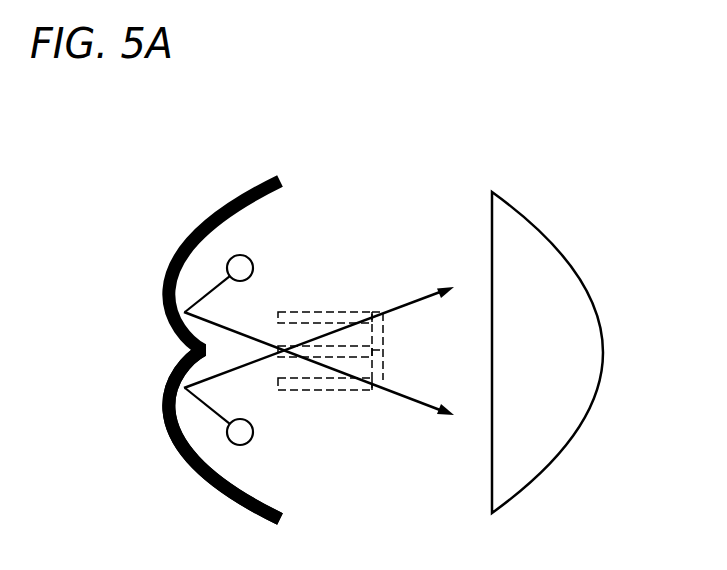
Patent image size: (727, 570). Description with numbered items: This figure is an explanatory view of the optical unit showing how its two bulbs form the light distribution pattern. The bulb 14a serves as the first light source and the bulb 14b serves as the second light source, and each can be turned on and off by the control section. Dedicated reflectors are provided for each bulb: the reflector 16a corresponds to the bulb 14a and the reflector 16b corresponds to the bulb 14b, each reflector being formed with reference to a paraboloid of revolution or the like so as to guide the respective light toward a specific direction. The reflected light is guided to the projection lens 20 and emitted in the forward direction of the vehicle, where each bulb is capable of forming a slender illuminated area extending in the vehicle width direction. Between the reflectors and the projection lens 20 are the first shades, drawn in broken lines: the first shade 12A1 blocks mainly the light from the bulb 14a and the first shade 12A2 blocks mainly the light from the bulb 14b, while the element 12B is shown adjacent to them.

The first shade 12A1 is at (348, 390).
The first shade 12A2 is at (333, 312).
The light emitting element body 12B is at (350, 352).
The bulb 14a is at (248, 430).
The bulb 14b is at (248, 268).
The reflector 16a is at (253, 511).
The reflector 16b is at (262, 192).
The projection lens 20 is at (562, 283).